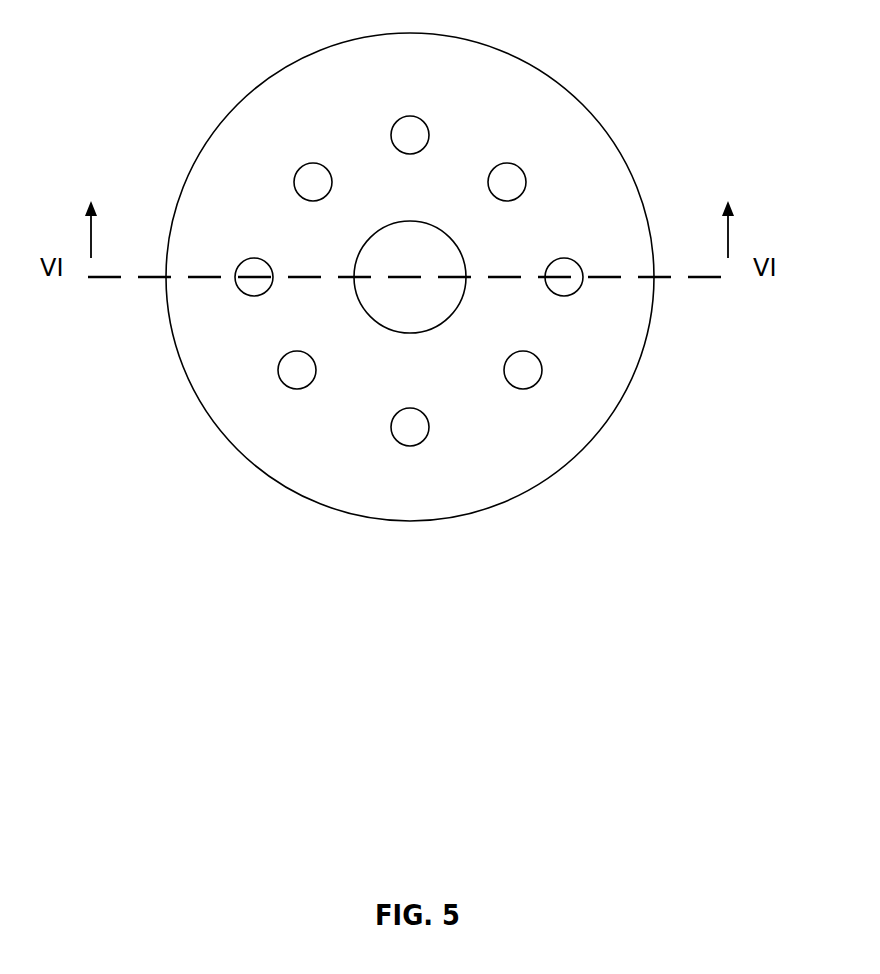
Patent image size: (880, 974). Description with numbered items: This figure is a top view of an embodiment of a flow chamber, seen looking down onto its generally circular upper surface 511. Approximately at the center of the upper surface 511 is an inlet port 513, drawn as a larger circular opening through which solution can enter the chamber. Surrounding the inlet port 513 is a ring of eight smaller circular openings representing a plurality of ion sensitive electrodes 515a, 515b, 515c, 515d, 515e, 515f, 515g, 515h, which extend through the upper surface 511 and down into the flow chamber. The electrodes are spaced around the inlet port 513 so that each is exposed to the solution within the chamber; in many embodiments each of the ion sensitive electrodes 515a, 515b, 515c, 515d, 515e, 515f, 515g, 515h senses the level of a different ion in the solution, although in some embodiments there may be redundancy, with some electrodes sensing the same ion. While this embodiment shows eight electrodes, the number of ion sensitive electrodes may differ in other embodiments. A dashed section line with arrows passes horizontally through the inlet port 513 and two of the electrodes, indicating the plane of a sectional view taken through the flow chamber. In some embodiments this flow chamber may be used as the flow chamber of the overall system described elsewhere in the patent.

The upper surface 511 is at (513, 100).
The inlet port 513 is at (432, 328).
The ion sensitive electrode 515a is at (410, 116).
The ion sensitive electrode 515b is at (521, 169).
The ion sensitive electrode 515c is at (568, 258).
The ion sensitive electrode 515d is at (537, 356).
The ion sensitive electrode 515e is at (391, 427).
The ion sensitive electrode 515f is at (285, 355).
The ion sensitive electrode 515g is at (241, 263).
The ion sensitive electrode 515h is at (304, 165).